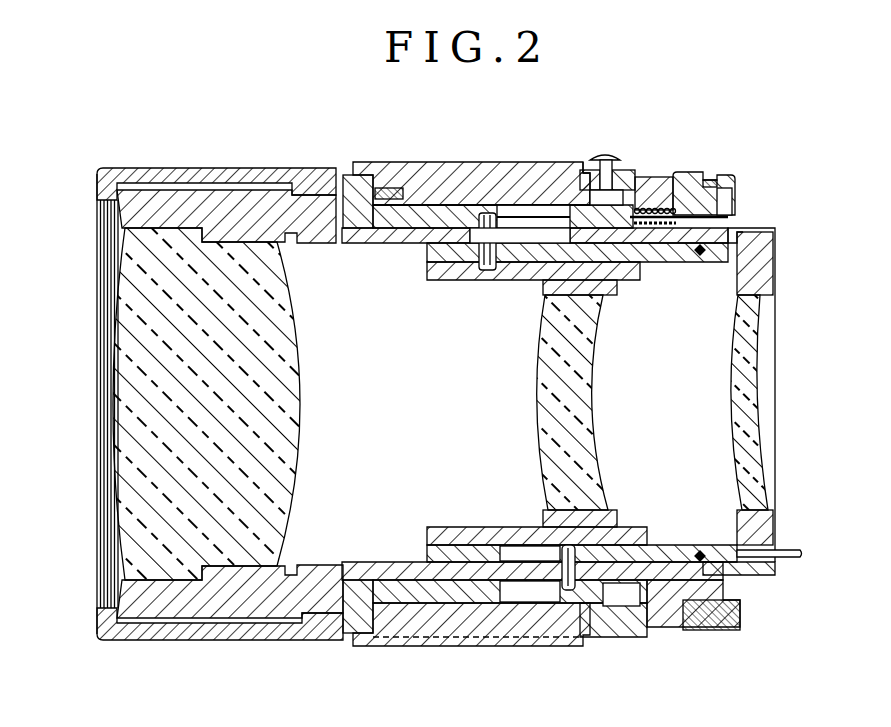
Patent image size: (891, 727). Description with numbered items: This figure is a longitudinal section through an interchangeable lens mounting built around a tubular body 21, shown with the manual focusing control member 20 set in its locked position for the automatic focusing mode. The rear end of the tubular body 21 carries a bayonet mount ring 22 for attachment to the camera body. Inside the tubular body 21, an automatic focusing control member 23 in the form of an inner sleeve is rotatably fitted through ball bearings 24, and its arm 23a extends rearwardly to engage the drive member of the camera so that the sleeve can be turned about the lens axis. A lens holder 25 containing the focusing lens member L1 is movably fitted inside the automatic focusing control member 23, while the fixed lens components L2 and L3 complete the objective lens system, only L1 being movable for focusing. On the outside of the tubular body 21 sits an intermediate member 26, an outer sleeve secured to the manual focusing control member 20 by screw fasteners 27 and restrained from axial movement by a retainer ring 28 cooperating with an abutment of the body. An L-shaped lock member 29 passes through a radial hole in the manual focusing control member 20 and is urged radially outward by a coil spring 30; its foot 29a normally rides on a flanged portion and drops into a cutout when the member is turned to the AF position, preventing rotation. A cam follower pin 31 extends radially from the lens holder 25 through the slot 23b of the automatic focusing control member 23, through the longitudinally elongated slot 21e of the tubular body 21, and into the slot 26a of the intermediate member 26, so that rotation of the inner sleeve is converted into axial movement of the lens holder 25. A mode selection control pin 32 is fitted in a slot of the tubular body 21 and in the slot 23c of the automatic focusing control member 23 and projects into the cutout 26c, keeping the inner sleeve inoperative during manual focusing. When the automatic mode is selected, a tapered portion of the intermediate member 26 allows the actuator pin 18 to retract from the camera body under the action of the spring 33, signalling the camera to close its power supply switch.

The actuator pin 18 is at (730, 218).
The manual focusing control member 20 is at (487, 200).
The tubular body 21 is at (393, 244).
The longitudinally elongated slot 21e is at (540, 244).
The bayonet mount ring 22 is at (736, 190).
The automatic focusing control member 23 is at (668, 263).
The arm 23a is at (801, 553).
The slot 23b is at (478, 272).
The slot 23c is at (515, 547).
The ball bearings 24 is at (698, 257).
The lens holder 25 is at (450, 527).
The intermediate member 26 is at (452, 190).
The slot 26a is at (550, 214).
The cutout 26c is at (527, 592).
The screw fasteners 27 is at (393, 187).
The retainer ring 28 is at (350, 166).
The lock member 29 is at (598, 156).
The foot 29a is at (645, 200).
The coil spring 30 is at (630, 185).
The cam follower pin 31 is at (522, 200).
The mode selection control pin 32 is at (565, 592).
The spring 33 is at (717, 187).
The focusing lens member L1 is at (590, 403).
The lens component L2 is at (295, 403).
The lens component L3 is at (758, 400).